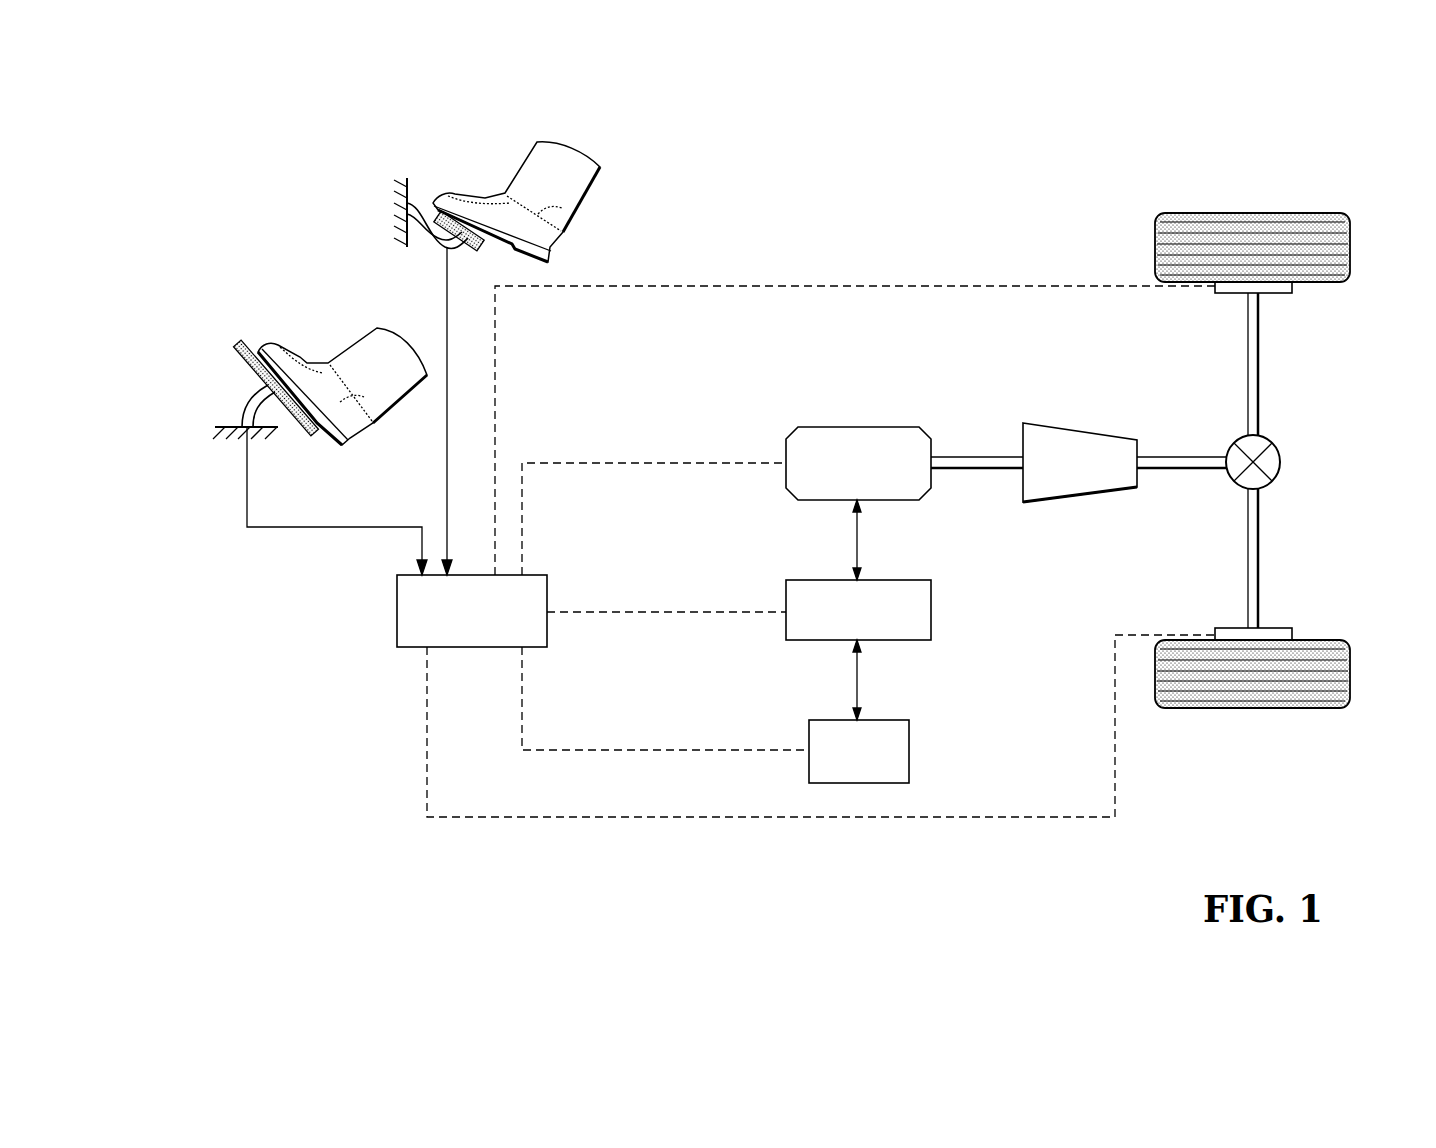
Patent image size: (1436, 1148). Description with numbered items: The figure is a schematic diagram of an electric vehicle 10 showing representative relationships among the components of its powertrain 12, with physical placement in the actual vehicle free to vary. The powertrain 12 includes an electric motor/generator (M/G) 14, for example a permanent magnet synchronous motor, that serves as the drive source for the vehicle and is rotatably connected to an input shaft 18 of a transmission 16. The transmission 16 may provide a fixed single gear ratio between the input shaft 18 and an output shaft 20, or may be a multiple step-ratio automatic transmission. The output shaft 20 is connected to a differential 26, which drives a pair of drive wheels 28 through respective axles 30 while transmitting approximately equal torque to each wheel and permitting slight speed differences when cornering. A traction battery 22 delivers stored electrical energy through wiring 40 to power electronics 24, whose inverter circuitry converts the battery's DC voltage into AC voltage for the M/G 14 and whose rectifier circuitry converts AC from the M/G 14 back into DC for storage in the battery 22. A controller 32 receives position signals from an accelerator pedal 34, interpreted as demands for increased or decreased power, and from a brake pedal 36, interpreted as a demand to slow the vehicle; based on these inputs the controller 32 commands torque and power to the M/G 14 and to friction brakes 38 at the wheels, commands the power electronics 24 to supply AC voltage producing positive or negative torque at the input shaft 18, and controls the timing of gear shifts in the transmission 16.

The electric vehicle 10 is at (1040, 125).
The powertrain 12 is at (915, 348).
The electric motor/generator (M/G) 14 is at (786, 448).
The transmission 16 is at (1078, 428).
The input shaft 18 is at (987, 456).
The output shaft 20 is at (1170, 456).
The traction battery 22 is at (809, 735).
The power electronics 24 is at (786, 595).
The differential 26 is at (1281, 462).
The drive wheels 28 is at (1253, 213).
The axles 30 is at (1260, 360).
The controller 32 is at (397, 607).
The accelerator pedal 34 is at (307, 320).
The brake pedal 36 is at (487, 157).
The friction brakes 38 is at (1293, 287).
The wiring 40 is at (858, 688).